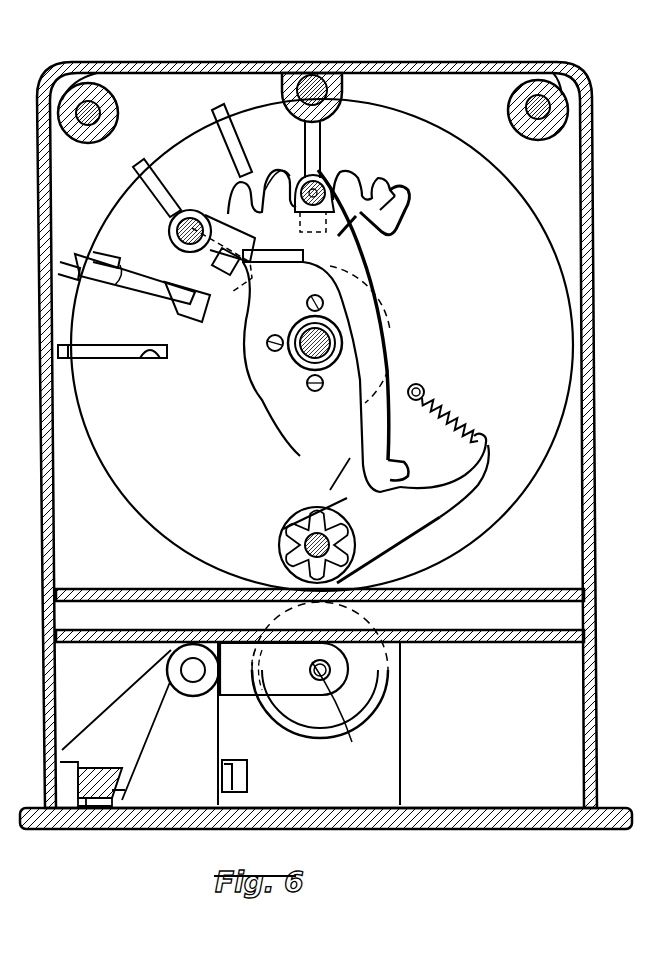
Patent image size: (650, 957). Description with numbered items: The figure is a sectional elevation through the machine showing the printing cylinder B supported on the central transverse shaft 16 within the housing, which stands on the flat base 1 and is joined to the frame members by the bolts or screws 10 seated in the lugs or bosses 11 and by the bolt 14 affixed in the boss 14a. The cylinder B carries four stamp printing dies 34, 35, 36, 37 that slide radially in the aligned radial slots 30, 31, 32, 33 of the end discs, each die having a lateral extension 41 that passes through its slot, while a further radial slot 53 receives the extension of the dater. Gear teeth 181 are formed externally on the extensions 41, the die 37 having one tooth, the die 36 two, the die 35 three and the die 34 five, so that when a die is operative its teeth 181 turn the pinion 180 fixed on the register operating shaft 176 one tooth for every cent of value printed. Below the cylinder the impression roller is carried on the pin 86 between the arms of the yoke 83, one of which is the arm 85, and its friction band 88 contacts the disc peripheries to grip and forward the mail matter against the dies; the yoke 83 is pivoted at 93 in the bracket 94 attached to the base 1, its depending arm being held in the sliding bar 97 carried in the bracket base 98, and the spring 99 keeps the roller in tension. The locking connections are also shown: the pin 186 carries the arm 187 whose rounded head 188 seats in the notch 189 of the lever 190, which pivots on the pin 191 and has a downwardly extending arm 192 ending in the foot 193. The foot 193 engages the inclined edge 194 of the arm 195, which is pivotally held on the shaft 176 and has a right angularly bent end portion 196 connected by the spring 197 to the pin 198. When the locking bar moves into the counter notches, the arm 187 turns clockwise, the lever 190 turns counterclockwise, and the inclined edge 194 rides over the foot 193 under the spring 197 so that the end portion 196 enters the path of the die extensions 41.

The flat base 1 is at (462, 826).
The bolts or screws 10 is at (505, 98).
The lugs or bosses 11 is at (520, 120).
The bolt 14 is at (338, 70).
The boss 14a is at (300, 78).
The central transverse shaft 16 is at (300, 365).
The radial slot 30 is at (322, 135).
The radial slot 31 is at (248, 136).
The radial slot 32 is at (165, 168).
The radial slot 33 is at (110, 282).
The stamp printing die 34 is at (332, 158).
The stamp printing die 35 is at (228, 192).
The stamp printing die 36 is at (168, 222).
The stamp printing die 37 is at (132, 282).
The lateral extension 41 is at (370, 238).
The radial slot 53 is at (140, 358).
The yoke 83 is at (243, 700).
The arm 85 is at (352, 742).
The pin 86 is at (330, 676).
The friction band 88 is at (385, 665).
The pivot 93 is at (165, 668).
The bracket 94 is at (196, 746).
The sliding bar 97 is at (247, 788).
The base of the bracket 98 is at (96, 812).
The spring 99 is at (108, 770).
The register operating shaft 176 is at (280, 548).
The pinion 180 is at (300, 530).
The gear teeth 181 is at (276, 170).
The pin 186 is at (180, 240).
The arm 187 is at (196, 312).
The rounded head 188 is at (243, 268).
The notch 189 is at (313, 210).
The lever 190 is at (398, 185).
The pin 191 is at (375, 185).
The downwardly extending arm 192 is at (368, 390).
The foot 193 is at (404, 458).
The inclined edge 194 is at (350, 475).
The arm 195 is at (340, 496).
The right angularly bent end portion 196 is at (486, 446).
The spring 197 is at (452, 420).
The pin 198 is at (423, 386).
The printing cylinder B is at (128, 484).